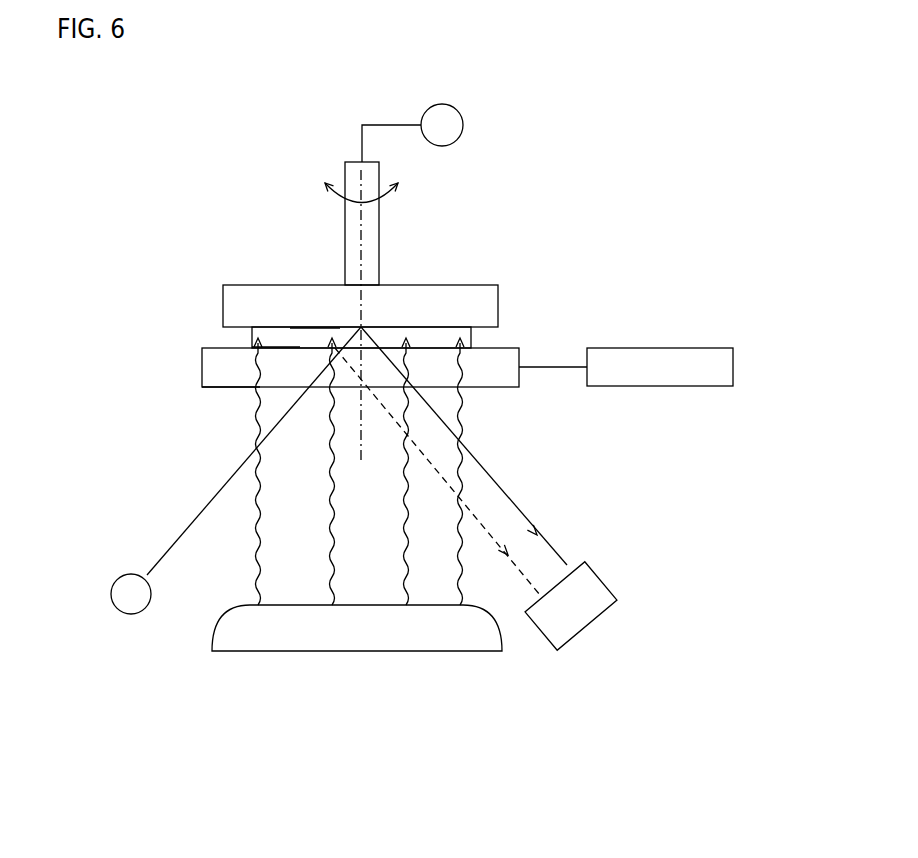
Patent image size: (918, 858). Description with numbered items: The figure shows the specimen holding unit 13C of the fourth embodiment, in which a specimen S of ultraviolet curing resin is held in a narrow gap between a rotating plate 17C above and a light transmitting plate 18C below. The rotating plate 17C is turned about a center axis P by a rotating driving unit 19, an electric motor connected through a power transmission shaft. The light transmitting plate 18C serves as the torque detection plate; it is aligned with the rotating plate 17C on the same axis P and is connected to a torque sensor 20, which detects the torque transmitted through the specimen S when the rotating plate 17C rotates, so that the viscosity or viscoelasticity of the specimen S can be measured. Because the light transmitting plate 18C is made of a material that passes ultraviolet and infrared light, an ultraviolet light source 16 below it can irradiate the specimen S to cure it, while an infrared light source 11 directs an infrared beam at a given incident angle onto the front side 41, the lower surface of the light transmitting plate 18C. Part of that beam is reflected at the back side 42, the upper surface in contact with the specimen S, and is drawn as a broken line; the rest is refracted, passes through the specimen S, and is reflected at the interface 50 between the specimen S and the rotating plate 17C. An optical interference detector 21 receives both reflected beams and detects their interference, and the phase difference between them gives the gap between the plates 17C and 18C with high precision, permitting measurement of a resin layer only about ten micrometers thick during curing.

The specimen holding unit 13C is at (416, 312).
The rotating driving unit 19 is at (441, 104).
The rotating plate 17C is at (465, 292).
The light transmitting plate 18C is at (483, 378).
The torque sensor 20 is at (637, 348).
The front side 41 is at (222, 388).
The back side 42 is at (277, 345).
The interface 50 is at (313, 330).
The infrared light source 11 is at (111, 594).
The ultraviolet light source 16 is at (357, 655).
The optical interference detector 21 is at (578, 638).
The center axis P is at (365, 222).
The specimen S is at (252, 342).